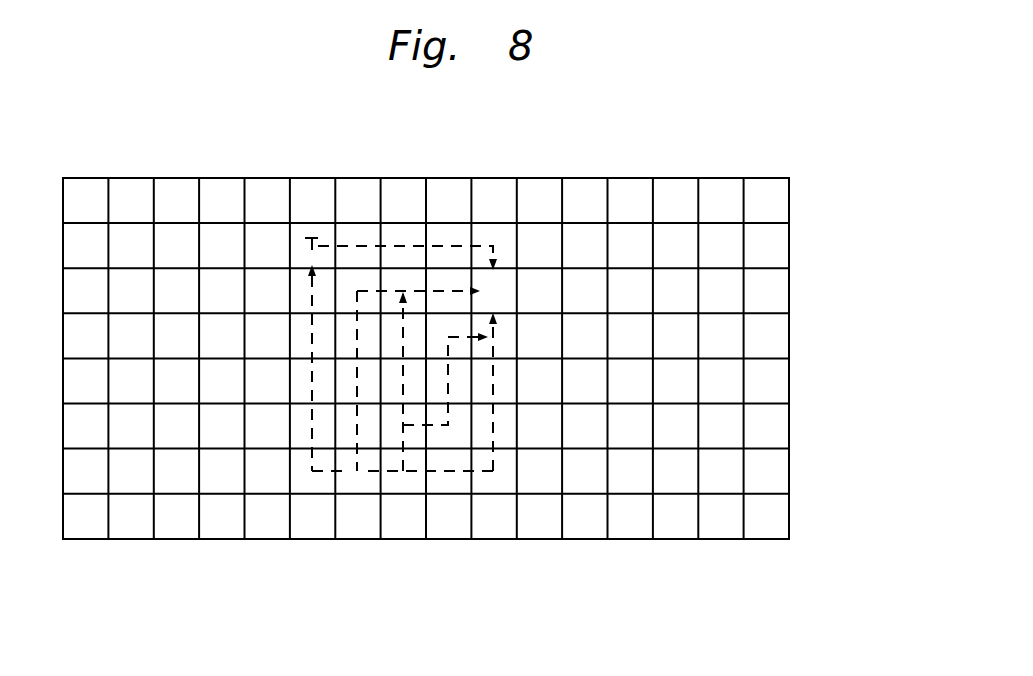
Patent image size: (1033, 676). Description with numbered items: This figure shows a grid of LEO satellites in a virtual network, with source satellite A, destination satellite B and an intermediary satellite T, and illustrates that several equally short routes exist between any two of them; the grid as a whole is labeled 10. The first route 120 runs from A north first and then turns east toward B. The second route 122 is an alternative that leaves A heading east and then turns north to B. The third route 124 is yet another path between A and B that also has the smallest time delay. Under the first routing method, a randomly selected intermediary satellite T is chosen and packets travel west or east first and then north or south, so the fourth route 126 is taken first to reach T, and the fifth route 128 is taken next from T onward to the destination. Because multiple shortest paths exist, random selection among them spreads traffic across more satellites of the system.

The grid / map area 10 is at (830, 270).
The Route 1 120 is at (358, 425).
The Route 2 122 is at (495, 420).
The Route 3 124 is at (448, 422).
The Route 4 126 is at (310, 297).
The Route 5 128 is at (392, 245).